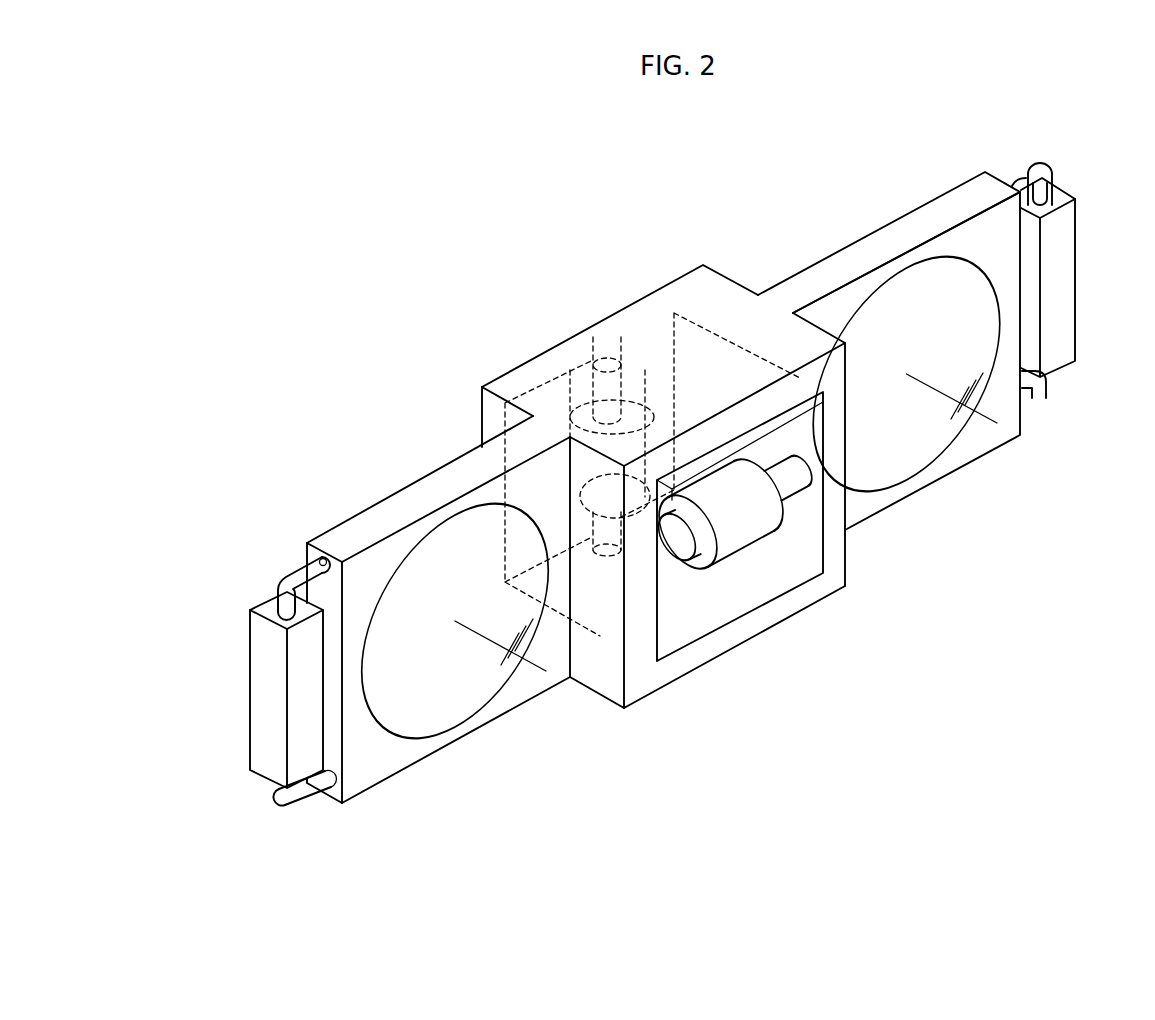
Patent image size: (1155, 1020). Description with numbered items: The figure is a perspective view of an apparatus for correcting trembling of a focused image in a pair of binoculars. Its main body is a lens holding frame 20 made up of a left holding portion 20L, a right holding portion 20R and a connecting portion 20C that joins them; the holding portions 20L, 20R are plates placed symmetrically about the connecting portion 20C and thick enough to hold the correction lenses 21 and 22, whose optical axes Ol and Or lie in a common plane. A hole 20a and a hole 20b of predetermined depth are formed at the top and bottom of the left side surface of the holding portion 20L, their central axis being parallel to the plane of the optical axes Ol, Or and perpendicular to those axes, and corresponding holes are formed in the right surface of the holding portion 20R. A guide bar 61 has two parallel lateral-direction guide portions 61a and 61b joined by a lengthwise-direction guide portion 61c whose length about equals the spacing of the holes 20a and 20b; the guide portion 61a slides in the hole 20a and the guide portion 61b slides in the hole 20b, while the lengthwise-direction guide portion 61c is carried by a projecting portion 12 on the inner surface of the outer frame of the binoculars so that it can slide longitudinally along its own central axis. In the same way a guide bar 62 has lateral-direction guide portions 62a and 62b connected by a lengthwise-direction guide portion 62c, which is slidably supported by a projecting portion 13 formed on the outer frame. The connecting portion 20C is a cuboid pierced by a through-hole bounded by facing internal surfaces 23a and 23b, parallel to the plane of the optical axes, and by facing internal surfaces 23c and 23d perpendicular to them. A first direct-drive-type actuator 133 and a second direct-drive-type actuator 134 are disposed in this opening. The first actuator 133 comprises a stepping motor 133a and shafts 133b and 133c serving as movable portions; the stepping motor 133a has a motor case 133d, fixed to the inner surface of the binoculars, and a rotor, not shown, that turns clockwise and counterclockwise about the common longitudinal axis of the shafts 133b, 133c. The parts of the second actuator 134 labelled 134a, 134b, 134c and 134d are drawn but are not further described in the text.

The projecting portion 12 is at (267, 688).
The projecting portion 13 is at (1065, 290).
The lens holding frame 20 is at (818, 636).
The holding portion 20L is at (398, 508).
The connecting portion 20C is at (610, 332).
The holding portion 20R is at (927, 220).
The hole 20a is at (323, 554).
The hole 20b is at (322, 790).
The correction lens 21 is at (422, 717).
The correction lens 22 is at (937, 433).
The internal surface 23a is at (708, 458).
The internal surface 23b is at (735, 615).
The internal surface 23c is at (818, 388).
The internal surface 23d is at (618, 655).
The guide bar 61 is at (240, 548).
The lateral-direction guide portion 61a is at (305, 572).
The lateral-direction guide portion 61b is at (300, 795).
The lengthwise-direction guide portion 61c is at (276, 598).
The guide bar 62 is at (1048, 158).
The lateral-direction guide portion 62a is at (1022, 180).
The lateral-direction guide portion 62b is at (1037, 390).
The lengthwise-direction guide portion 62c is at (1047, 195).
The first direct-drive-type actuator 133 is at (750, 565).
The stepping motor 133a is at (688, 578).
The shaft 133b is at (793, 478).
The shaft 133c is at (660, 558).
The motor case 133d is at (785, 532).
The second direct-drive-type actuator 134 is at (633, 372).
The pin sleeve 134a is at (568, 403).
The pin head 134b is at (597, 343).
The pin lower end 134c is at (597, 545).
The pin upper end 134d is at (600, 332).
The optical axis Ol is at (546, 670).
The optical axis Or is at (987, 420).